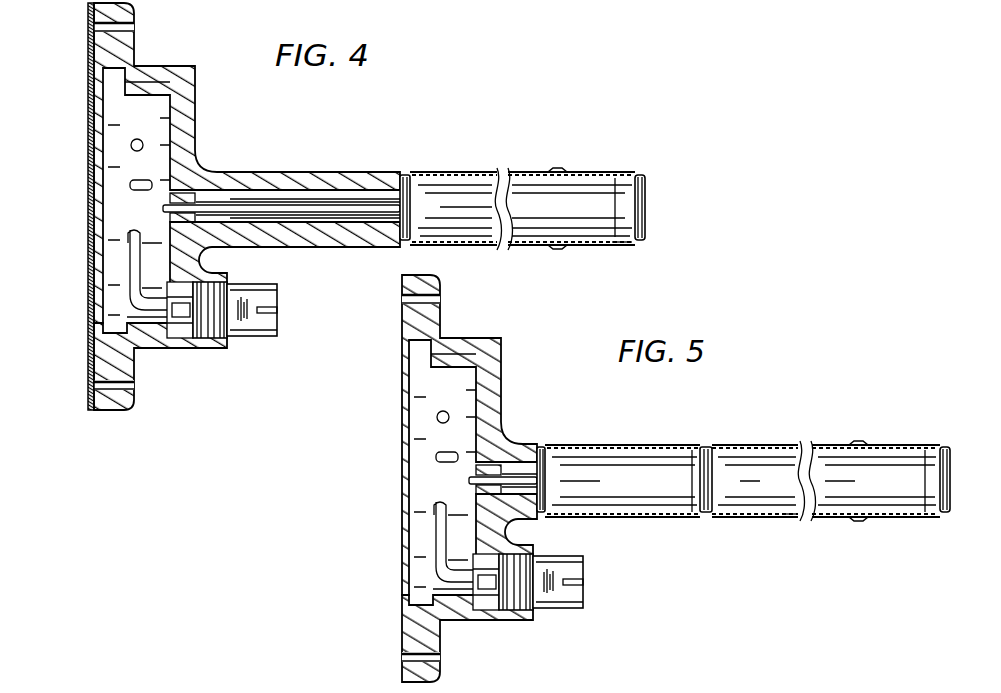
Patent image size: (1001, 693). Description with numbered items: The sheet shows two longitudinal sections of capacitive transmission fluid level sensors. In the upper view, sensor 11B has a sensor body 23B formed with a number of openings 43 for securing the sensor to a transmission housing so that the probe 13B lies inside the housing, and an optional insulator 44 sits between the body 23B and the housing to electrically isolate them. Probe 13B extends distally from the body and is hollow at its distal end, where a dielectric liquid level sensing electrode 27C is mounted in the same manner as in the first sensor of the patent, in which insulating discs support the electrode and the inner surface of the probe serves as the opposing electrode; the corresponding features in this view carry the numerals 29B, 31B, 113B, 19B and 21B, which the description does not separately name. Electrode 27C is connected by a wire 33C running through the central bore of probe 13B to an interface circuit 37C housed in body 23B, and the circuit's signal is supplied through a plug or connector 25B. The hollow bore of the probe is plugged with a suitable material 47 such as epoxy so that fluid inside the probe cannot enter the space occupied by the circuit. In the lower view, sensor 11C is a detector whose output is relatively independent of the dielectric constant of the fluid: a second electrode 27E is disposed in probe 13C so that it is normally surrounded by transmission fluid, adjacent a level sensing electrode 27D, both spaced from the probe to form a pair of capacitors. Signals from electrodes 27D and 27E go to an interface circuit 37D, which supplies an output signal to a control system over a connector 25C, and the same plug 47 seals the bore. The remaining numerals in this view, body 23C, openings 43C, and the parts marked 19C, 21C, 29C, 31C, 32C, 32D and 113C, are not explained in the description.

In FIG. 4, the sensor 11B is at (540, 138).
In FIG. 5, the sensor 11C is at (860, 382).
In FIG. 4, the probe 13B is at (356, 171).
In FIG. 5, the probe 13C is at (675, 518).
In FIG. 4, the crimp ring 19B is at (556, 171).
In FIG. 5, the crimp ring 19C is at (858, 445).
In FIG. 4, the end cap 21B is at (409, 172).
In FIG. 5, the end cap 21C is at (539, 446).
In FIG. 4, the sensor body 23B is at (197, 118).
In FIG. 5, the housing body 23C is at (502, 382).
In FIG. 4, the plug or connector 25B is at (255, 338).
In FIG. 5, the connector 25C is at (559, 609).
In FIG. 4, the dielectric liquid level sensing electrode 27C is at (455, 172).
In FIG. 5, the level sensing electrode 27D is at (885, 491).
In FIG. 5, the second electrode 27E is at (640, 490).
In FIG. 4, the inner sleeve 29B is at (413, 207).
In FIG. 5, the inner sleeve 29C is at (800, 477).
In FIG. 4, the end wall 31B is at (646, 198).
In FIG. 5, the end wall 31C is at (938, 497).
In FIG. 5, the spacer 32C is at (547, 478).
In FIG. 5, the spacer 32D is at (697, 468).
In FIG. 4, the wire 33C is at (300, 214).
In FIG. 4, the interface circuit 37C is at (149, 157).
In FIG. 5, the interface circuit 37D is at (468, 403).
In FIG. 4, the openings 43 is at (134, 25).
In FIG. 5, the mounting hole 43C is at (441, 300).
In FIG. 4, the insulator 44 is at (89, 97).
In FIG. 4, the plugging material 47 is at (200, 200).
In FIG. 5, the plugging material 47 is at (507, 464).
In FIG. 4, the sheath lower wall 113B is at (621, 247).
In FIG. 5, the sheath lower wall 113C is at (798, 512).